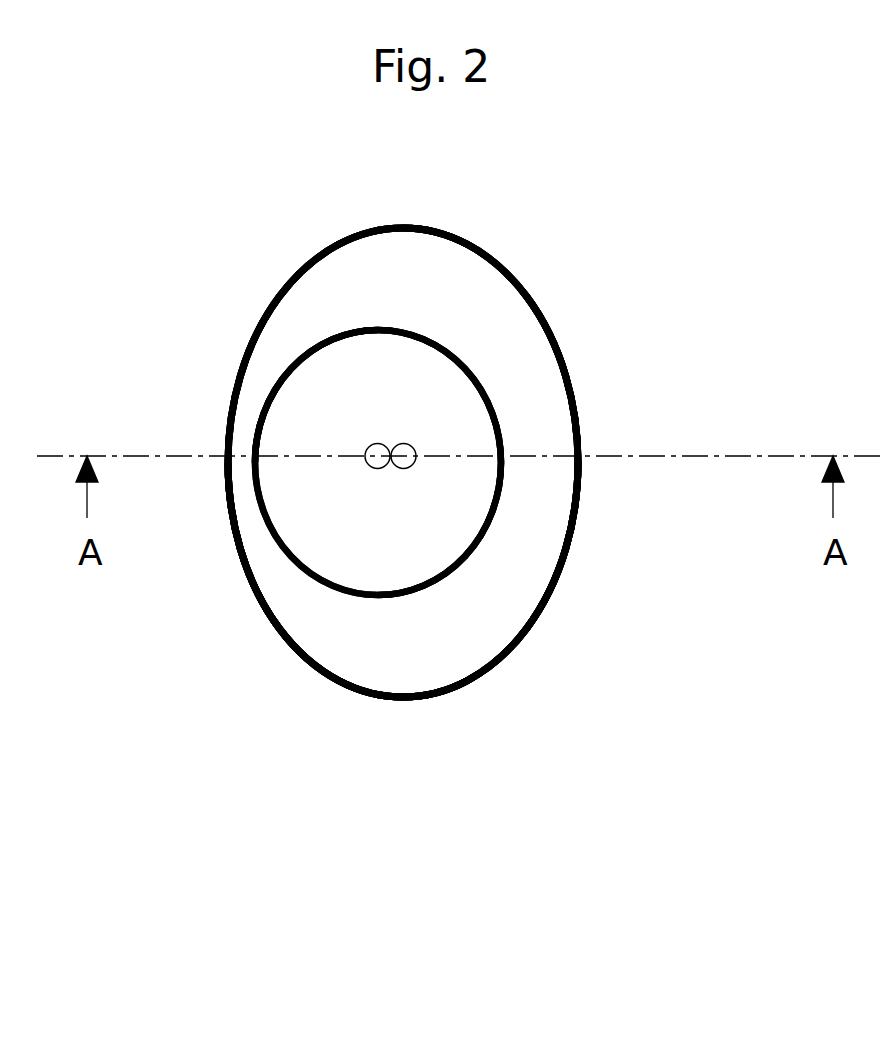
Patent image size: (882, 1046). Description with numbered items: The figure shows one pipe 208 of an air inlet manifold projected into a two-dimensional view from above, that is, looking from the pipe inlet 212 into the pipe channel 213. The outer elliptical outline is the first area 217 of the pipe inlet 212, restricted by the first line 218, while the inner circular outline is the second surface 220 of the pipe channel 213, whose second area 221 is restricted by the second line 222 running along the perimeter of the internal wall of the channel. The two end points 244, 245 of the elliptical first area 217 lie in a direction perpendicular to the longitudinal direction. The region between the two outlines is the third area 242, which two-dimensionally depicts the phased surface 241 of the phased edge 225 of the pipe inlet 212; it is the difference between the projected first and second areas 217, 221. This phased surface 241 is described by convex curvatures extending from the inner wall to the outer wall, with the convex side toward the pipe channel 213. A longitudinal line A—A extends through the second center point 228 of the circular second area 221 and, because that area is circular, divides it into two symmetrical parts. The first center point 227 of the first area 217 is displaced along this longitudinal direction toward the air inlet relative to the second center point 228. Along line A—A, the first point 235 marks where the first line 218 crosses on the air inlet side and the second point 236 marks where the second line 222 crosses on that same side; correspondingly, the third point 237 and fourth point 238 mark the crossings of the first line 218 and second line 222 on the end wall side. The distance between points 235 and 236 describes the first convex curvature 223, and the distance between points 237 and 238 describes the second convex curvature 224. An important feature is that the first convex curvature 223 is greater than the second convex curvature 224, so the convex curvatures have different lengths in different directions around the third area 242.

The pipe 208 is at (655, 776).
The pipe inlet 212 is at (412, 700).
The pipe channel 213 is at (387, 370).
The first area 217 is at (455, 292).
The first line 218 is at (545, 610).
The second surface 220 is at (328, 367).
The second area 221 is at (428, 532).
The second line 222 is at (285, 382).
The first convex curvature 223 is at (553, 482).
The second convex curvature 224 is at (238, 469).
The phased edge 225 is at (542, 520).
The first center point 227 is at (380, 468).
The second center point 228 is at (401, 468).
The first point 235 is at (587, 455).
The second point 236 is at (512, 455).
The third point 237 is at (217, 455).
The fourth point 238 is at (248, 437).
The phased surface 241 is at (347, 648).
The third area 242 is at (313, 649).
The end point 244 is at (368, 227).
The end point 245 is at (440, 648).